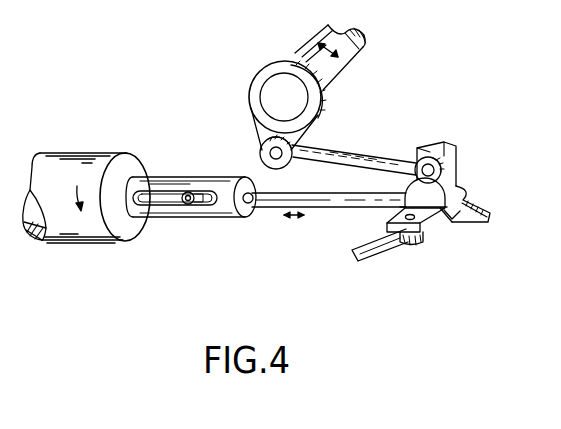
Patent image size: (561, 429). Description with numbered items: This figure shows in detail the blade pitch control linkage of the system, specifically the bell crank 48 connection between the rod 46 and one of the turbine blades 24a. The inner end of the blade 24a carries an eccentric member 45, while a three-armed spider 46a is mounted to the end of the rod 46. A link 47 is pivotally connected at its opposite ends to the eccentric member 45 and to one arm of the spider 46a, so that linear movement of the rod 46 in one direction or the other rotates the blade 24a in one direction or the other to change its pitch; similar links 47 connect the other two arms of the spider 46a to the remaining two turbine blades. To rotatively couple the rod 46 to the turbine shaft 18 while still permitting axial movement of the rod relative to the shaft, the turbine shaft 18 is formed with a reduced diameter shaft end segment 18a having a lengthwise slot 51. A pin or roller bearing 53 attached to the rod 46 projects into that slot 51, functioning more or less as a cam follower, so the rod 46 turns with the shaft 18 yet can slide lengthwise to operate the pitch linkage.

The turbine shaft 18 is at (90, 231).
The reduced diameter shaft end segment 18a is at (172, 221).
The blade 24a is at (317, 34).
The eccentric member 45 is at (249, 108).
The rod 46 is at (330, 196).
The three-armed spider 46a is at (452, 223).
The link 47 is at (346, 157).
The bell crank 48 is at (176, 90).
The lengthwise slot 51 is at (163, 193).
The pin or roller bearing 53 is at (191, 193).